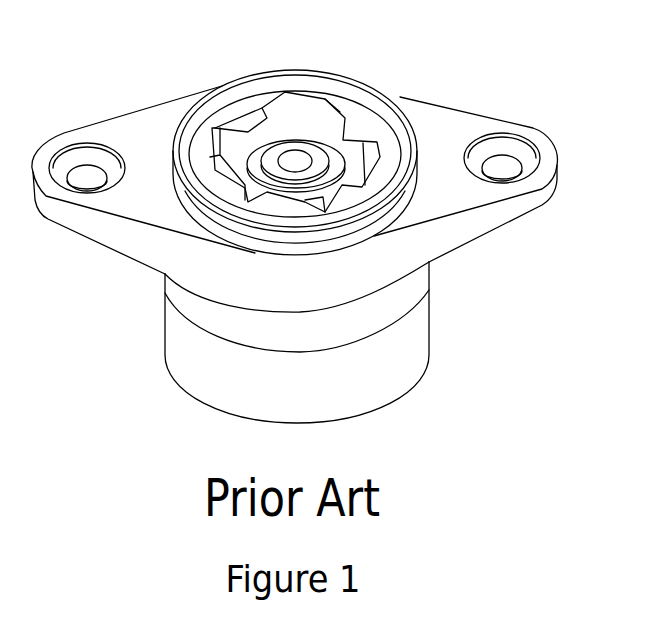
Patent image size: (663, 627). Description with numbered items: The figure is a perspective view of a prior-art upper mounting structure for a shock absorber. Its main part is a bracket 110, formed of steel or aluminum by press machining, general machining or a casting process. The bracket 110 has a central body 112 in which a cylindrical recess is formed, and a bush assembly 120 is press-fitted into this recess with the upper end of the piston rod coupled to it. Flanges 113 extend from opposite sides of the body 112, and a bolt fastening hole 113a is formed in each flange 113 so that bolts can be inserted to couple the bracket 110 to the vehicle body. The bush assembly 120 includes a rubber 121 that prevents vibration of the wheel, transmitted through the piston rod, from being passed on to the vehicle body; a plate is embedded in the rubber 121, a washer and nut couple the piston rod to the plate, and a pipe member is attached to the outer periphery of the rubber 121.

The bracket 110 is at (295, 234).
The body 112 is at (163, 329).
The flanges 113 is at (107, 238).
The bolt fastening holes 113a is at (87, 175).
The bush assembly 120 is at (399, 100).
The rubber 121 is at (250, 117).